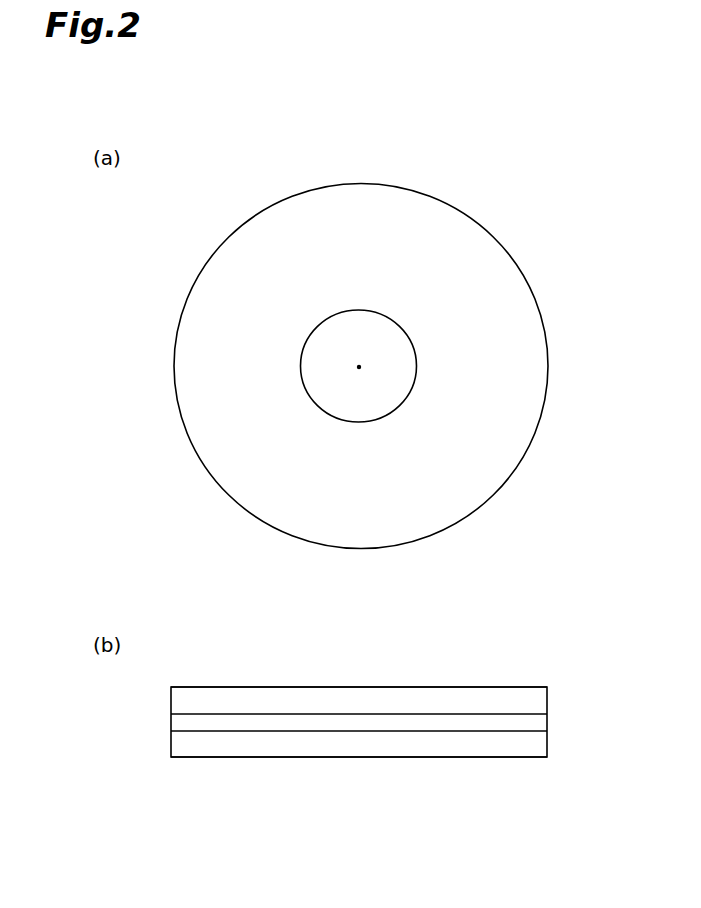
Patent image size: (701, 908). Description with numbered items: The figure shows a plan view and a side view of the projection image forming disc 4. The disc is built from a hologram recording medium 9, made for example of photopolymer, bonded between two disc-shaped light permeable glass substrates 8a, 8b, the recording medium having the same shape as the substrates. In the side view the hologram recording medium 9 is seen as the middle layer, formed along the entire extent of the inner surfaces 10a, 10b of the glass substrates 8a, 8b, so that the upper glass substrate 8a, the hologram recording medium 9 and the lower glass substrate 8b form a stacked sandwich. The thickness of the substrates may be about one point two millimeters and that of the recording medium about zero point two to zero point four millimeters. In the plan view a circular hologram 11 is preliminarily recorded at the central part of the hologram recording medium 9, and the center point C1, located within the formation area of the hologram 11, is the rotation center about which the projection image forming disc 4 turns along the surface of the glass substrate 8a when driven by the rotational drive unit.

The projection image forming disc 4 is at (515, 262).
The hologram 11 is at (393, 356).
The glass substrate 8a is at (502, 400).
The glass substrate 8b is at (183, 743).
The hologram recording medium 9 is at (183, 722).
The inner surface 10a is at (533, 718).
The inner surface 10b is at (533, 727).
The center point C1 is at (359, 367).